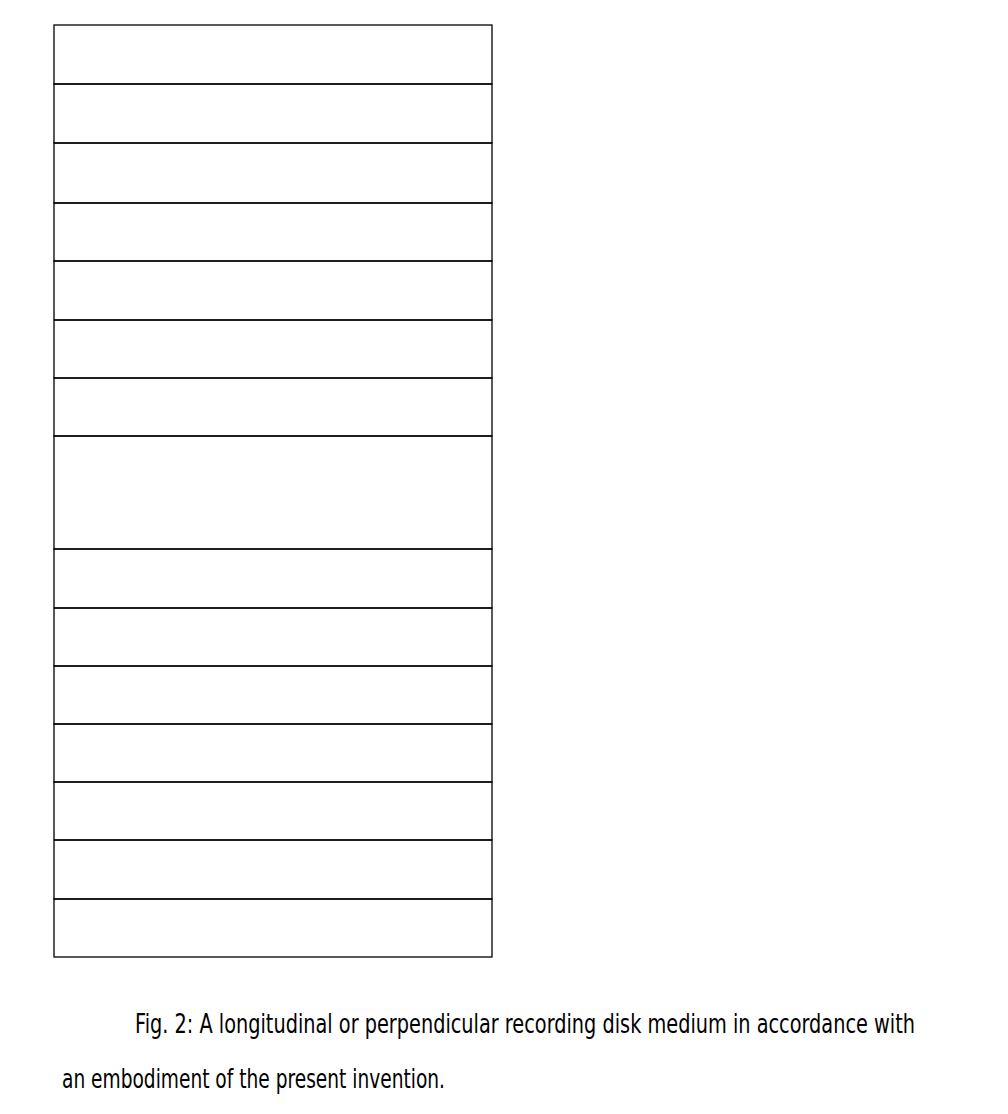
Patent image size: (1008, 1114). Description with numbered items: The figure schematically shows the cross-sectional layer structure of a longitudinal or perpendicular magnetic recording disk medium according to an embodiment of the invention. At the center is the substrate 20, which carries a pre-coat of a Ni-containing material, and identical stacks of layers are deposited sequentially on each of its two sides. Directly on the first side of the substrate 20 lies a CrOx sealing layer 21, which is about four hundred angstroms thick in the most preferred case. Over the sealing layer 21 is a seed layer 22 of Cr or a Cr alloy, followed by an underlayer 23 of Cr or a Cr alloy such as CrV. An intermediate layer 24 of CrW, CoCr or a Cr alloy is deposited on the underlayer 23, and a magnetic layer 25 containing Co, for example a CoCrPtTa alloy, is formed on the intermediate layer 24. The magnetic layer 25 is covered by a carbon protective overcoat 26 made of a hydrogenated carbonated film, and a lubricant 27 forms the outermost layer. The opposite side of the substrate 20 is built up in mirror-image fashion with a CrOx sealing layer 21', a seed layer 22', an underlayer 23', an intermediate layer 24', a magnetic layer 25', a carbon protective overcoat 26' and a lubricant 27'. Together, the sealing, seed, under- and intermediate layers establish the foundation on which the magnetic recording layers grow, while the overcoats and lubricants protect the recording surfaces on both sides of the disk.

The lubricant 27 is at (313, 54).
The carbon protective overcoat 26 is at (313, 113).
The magnetic layer 25 is at (313, 173).
The intermediate layer 24 is at (313, 232).
The underlayer 23 is at (313, 290).
The seed layer 22 is at (313, 349).
The CrOx sealing layer 21 is at (313, 407).
The substrate 20 is at (507, 507).
The CrOx sealing layer 21' is at (316, 578).
The seed layer 22' is at (316, 637).
The underlayer 23' is at (316, 695).
The intermediate layer 24' is at (316, 753).
The magnetic layer 25' is at (316, 811).
The carbon protective overcoat 26' is at (316, 869).
The lubricant 27' is at (316, 928).